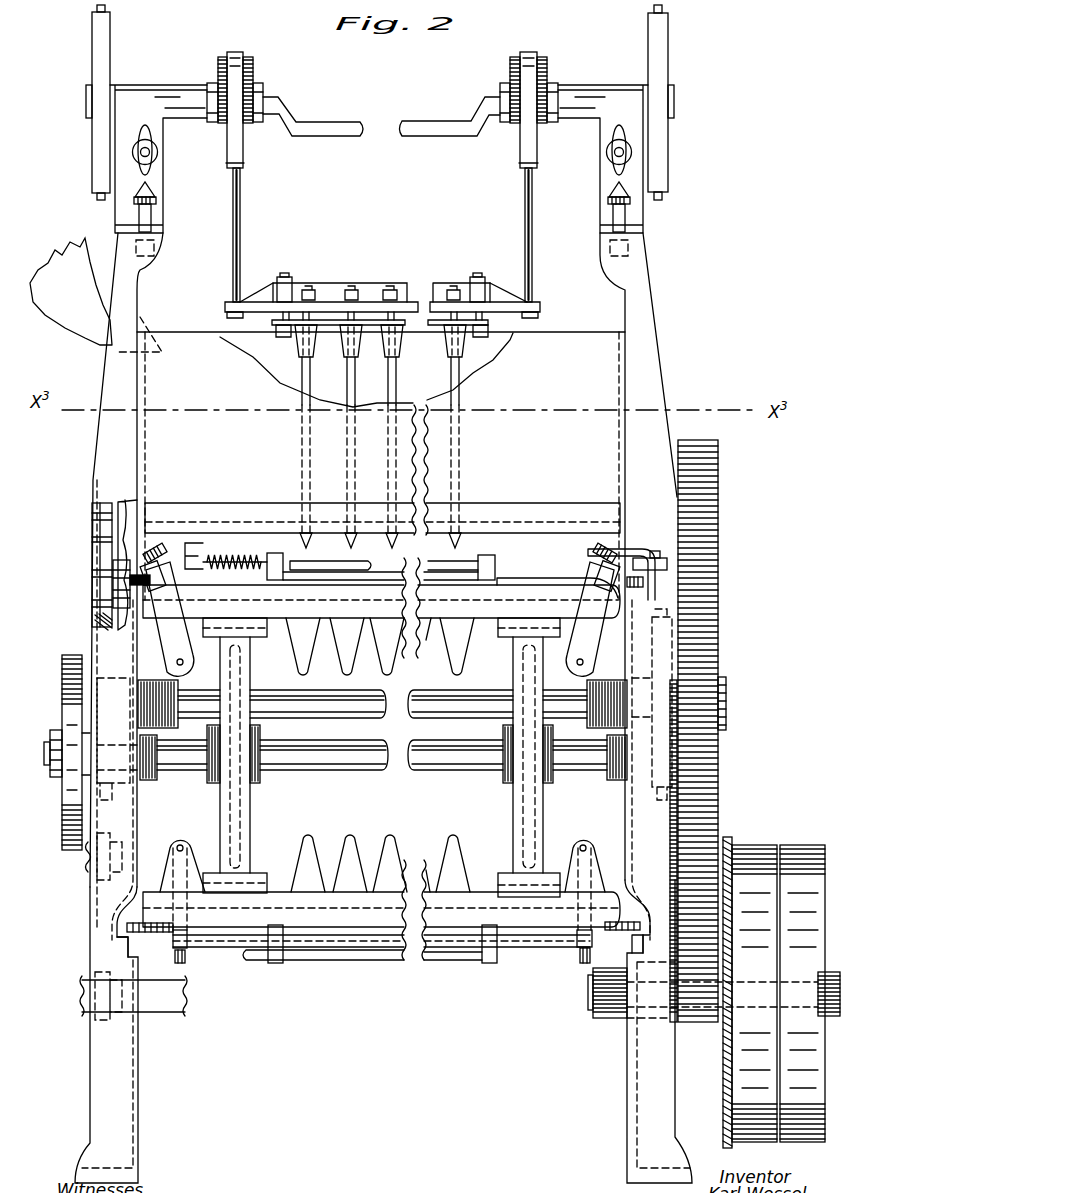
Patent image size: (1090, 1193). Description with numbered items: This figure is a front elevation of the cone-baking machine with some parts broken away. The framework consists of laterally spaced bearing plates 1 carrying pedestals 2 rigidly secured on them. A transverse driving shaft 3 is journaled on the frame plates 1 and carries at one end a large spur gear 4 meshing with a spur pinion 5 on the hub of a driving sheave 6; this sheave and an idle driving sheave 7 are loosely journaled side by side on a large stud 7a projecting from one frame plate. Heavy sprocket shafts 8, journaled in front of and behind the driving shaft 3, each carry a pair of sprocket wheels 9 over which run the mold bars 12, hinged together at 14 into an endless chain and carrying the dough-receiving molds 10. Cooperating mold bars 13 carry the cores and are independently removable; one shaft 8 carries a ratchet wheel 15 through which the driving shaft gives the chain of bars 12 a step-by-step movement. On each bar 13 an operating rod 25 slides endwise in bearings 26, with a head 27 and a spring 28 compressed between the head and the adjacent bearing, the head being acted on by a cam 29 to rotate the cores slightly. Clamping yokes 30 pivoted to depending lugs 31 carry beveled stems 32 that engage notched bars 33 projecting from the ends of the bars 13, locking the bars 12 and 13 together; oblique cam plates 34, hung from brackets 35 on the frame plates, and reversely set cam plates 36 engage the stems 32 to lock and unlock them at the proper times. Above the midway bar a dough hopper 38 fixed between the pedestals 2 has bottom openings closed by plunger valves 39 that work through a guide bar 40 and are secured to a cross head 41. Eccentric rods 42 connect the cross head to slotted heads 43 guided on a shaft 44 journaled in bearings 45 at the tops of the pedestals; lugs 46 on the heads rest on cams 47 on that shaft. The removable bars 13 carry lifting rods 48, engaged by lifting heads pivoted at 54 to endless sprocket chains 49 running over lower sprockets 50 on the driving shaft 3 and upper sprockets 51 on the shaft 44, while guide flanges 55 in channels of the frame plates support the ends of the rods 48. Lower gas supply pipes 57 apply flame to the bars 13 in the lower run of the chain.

The bearing plates 1 is at (97, 920).
The pedestals 2 is at (98, 465).
The transverse driving shaft 3 is at (274, 700).
The large spur gear 4 is at (707, 583).
The spur pinion 5 is at (702, 1003).
The driving sheave 6 is at (576, 883).
The idle driving sheave 7 is at (800, 860).
The large stud 7a is at (590, 997).
The sprocket shafts 8 is at (362, 758).
The sprocket wheels 9 is at (245, 817).
The receiving molds 10 is at (337, 633).
The mold bars 12 is at (440, 610).
The mold bars 13 is at (457, 580).
The hinge connection 14 is at (263, 625).
The ratchet wheel 15 is at (65, 653).
The operating rod 25 is at (290, 547).
The bearings 26 is at (493, 987).
The head 27 is at (207, 542).
The spring 28 is at (248, 549).
The cam 29 is at (620, 540).
The clamping yokes 30 is at (153, 582).
The depending lugs 31 is at (188, 640).
The projecting stems 32 is at (164, 547).
The bars 33 is at (548, 577).
The cam plates 34 is at (597, 555).
The brackets 35 is at (653, 557).
The cam plates 36 is at (190, 542).
The dough supplying hopper 38 is at (577, 353).
The plunger valves 39 is at (305, 377).
The guide bar 40 is at (312, 345).
The cross head 41 is at (328, 292).
The eccentric rods 42 is at (241, 250).
The slotted heads 43 is at (245, 152).
The shaft 44 is at (268, 102).
The bearings 45 is at (133, 100).
The lugs 46 is at (222, 58).
The cams 47 is at (249, 82).
The lifting rods 48 is at (113, 585).
The endless sprocket chains 49 is at (95, 542).
The lower sprockets 50 is at (95, 623).
The upper sprockets 51 is at (102, 148).
The pivot 54 is at (125, 507).
The guide flanges 55 is at (128, 940).
The lower gas supply pipes 57 is at (80, 1012).